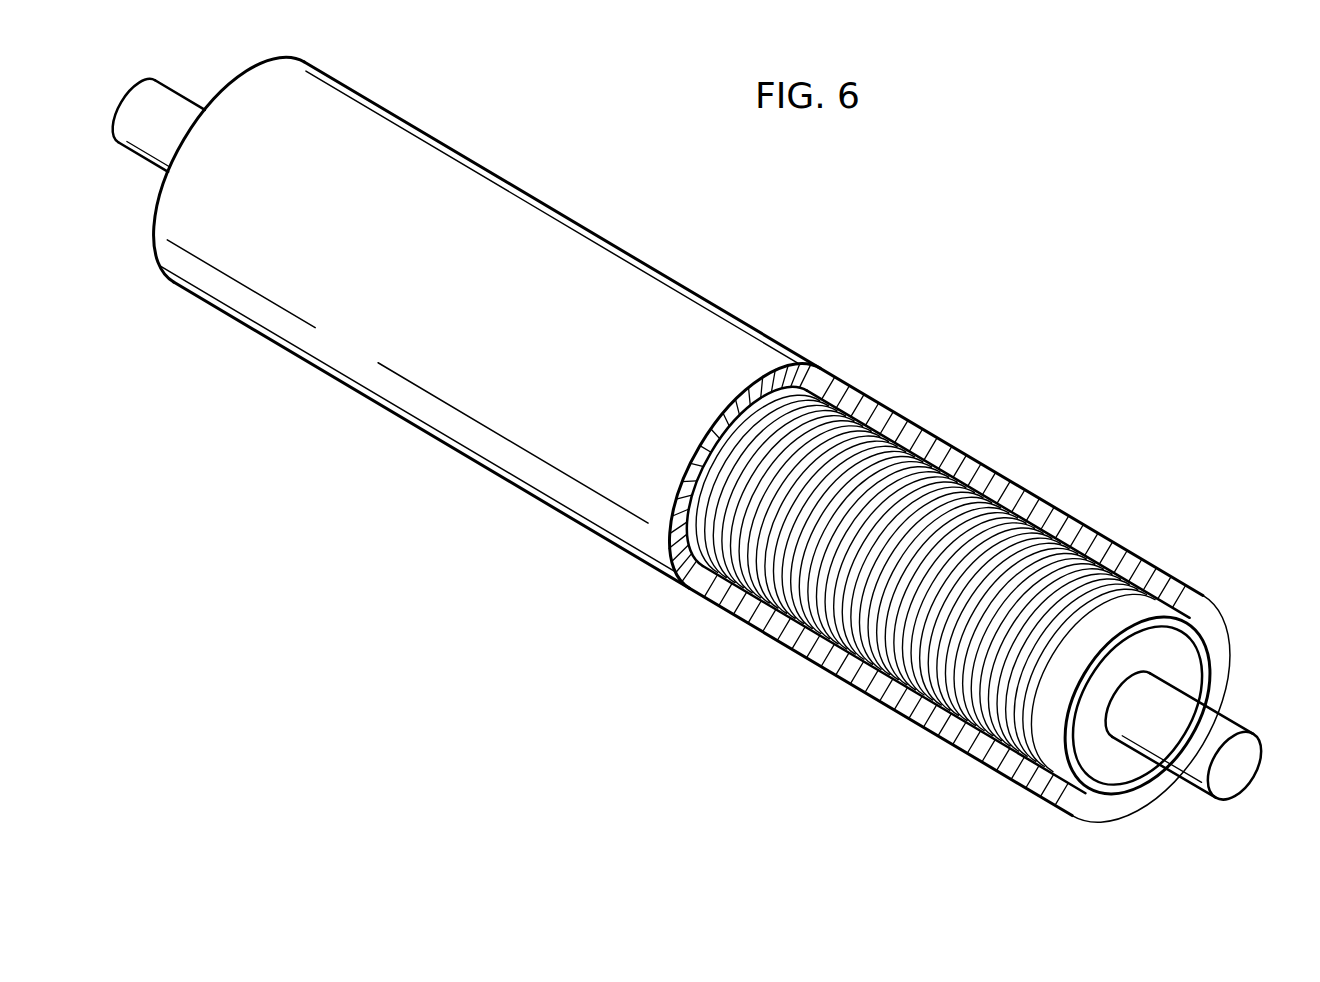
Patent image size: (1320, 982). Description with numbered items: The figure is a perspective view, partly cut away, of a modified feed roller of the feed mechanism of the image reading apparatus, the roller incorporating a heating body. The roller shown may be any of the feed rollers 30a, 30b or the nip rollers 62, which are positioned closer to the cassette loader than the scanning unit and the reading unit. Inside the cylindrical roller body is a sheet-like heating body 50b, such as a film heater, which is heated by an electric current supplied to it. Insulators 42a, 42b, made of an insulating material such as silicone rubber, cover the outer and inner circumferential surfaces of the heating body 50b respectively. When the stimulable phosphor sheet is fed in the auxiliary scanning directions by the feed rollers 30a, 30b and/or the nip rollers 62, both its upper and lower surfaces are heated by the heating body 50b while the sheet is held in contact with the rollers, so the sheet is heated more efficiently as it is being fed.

The feed roller 30a is at (629, 408).
The feed roller 30b is at (629, 408).
The nip roller 62 is at (696, 288).
The insulator 42a is at (1222, 637).
The insulator 42b is at (1108, 768).
The sheet-like heating body 50b is at (857, 632).